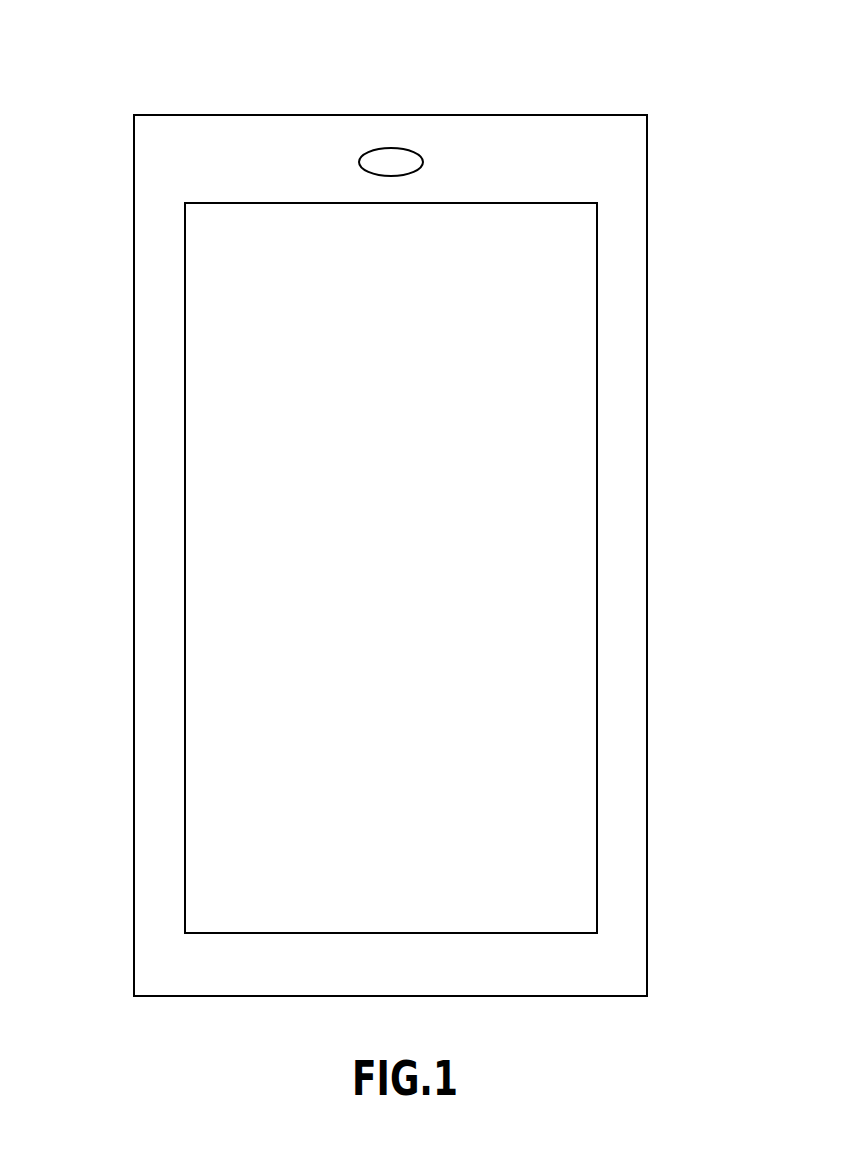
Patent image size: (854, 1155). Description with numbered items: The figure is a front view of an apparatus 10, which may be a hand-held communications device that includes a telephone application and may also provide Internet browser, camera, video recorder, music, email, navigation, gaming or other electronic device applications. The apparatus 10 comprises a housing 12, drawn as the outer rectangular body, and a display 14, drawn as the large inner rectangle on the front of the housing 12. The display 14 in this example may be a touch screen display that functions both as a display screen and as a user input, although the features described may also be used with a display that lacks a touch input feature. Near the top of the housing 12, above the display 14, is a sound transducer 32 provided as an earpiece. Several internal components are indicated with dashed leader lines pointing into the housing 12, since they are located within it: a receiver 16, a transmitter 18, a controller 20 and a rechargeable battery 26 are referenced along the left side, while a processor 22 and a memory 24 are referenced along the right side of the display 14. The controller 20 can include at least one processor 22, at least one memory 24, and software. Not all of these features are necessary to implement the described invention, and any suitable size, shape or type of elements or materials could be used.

The apparatus 10 is at (652, 72).
The housing 12 is at (134, 237).
The display 14 is at (568, 424).
The receiver 16 is at (134, 350).
The transmitter 18 is at (134, 451).
The controller 20 is at (134, 566).
The processor 22 is at (568, 620).
The memory 24 is at (568, 810).
The rechargeable battery 26 is at (134, 681).
The sound transducer 32 is at (383, 148).